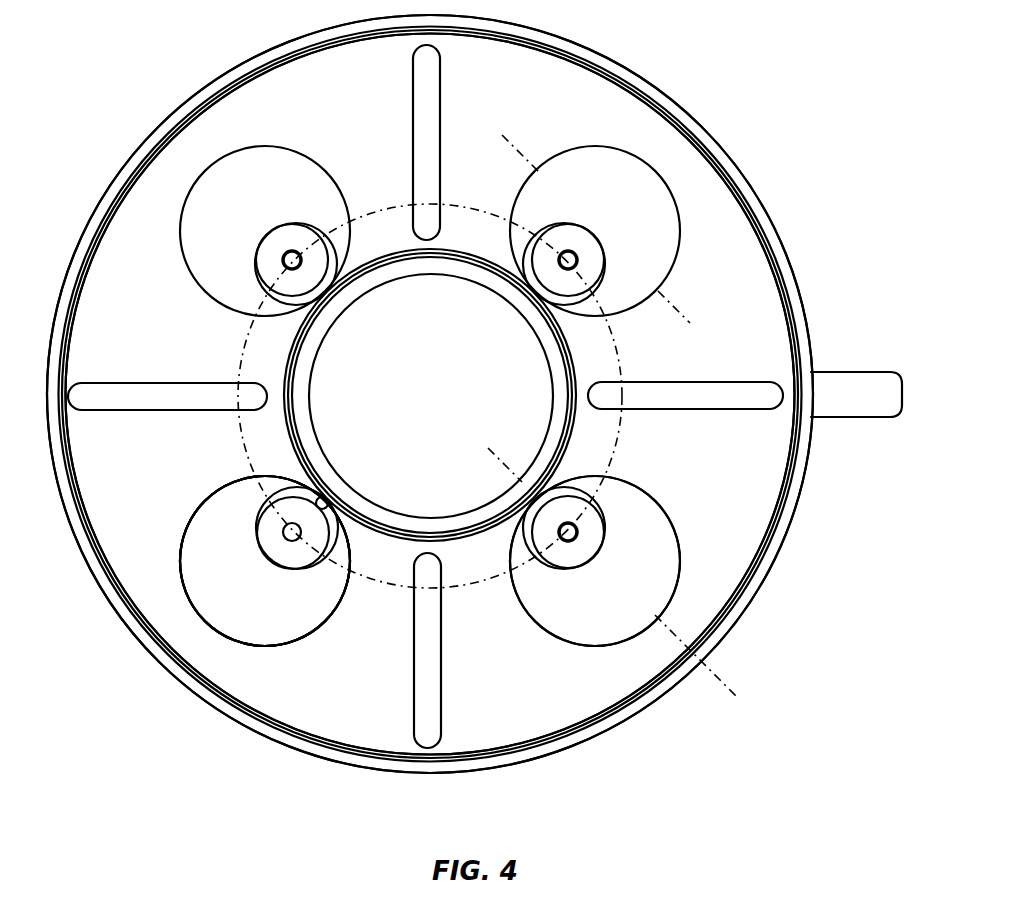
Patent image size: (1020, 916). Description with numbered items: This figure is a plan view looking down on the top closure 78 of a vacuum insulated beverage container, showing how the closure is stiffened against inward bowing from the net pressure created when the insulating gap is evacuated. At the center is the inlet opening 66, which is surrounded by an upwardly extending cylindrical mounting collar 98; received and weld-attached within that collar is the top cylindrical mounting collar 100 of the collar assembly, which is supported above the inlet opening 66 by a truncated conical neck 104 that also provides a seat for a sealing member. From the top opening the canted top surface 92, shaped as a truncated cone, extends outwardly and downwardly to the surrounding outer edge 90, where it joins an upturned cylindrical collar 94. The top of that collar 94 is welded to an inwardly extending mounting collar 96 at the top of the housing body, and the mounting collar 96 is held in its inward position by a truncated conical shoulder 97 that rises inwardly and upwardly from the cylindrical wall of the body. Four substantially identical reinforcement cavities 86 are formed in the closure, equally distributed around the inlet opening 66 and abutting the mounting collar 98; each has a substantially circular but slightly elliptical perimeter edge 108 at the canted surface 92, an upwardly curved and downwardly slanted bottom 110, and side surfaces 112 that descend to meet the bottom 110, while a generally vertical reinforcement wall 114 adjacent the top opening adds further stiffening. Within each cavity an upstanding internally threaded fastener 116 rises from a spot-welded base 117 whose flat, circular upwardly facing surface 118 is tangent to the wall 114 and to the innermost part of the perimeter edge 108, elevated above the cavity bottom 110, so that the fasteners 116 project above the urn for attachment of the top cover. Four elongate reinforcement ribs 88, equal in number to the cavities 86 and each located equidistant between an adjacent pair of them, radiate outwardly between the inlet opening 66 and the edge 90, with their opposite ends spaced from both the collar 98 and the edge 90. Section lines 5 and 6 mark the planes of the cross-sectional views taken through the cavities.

The inlet opening 66 is at (430, 395).
The top closure 78 is at (592, 98).
The reinforcement cavities 86 is at (287, 153).
The reinforcement ribs 88 is at (432, 103).
The outer edge 90 is at (88, 312).
The canted top surface 92 is at (120, 270).
The upturned cylindrical collar 94 is at (150, 147).
The mounting collar 96 is at (115, 208).
The truncated conical shoulder 97 is at (193, 100).
The cylindrical mounting collar 98 is at (242, 360).
The top cylindrical mounting collar 100 is at (296, 355).
The truncated conical neck 104 is at (305, 397).
The perimeter edges 108 is at (280, 642).
The cavity bottoms 110 is at (200, 548).
The side surfaces 112 is at (317, 623).
The reinforcement wall 114 is at (327, 501).
The fastener 116 is at (284, 530).
The fastener base 117 is at (273, 548).
The upwardly facing surface 118 is at (337, 538).
The section line 5- 5 is at (502, 135).
The section line 6- 6 is at (488, 448).